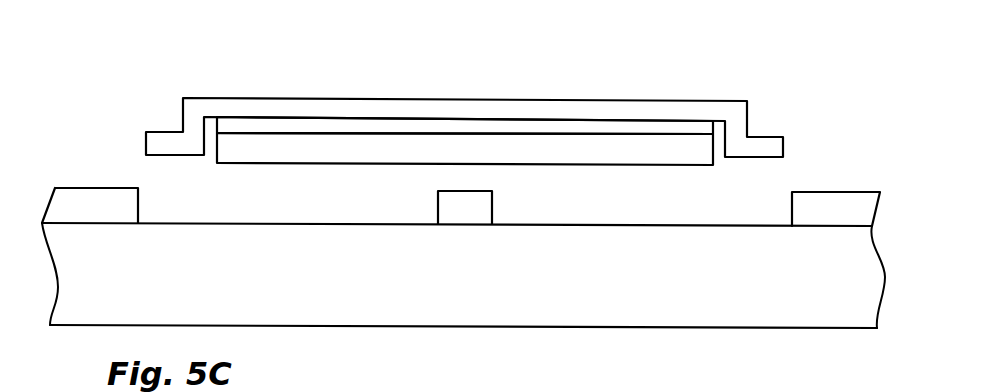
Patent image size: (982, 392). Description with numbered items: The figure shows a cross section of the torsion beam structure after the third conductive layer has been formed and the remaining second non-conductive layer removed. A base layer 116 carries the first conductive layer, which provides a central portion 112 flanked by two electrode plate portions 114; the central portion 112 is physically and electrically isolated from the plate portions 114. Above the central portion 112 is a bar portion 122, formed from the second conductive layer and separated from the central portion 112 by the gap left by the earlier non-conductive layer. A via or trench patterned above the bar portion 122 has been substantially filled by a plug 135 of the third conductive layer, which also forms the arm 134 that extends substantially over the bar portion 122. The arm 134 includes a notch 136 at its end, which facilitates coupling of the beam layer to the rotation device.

The central portion 112 is at (477, 210).
The electrode plate portions 114 is at (85, 210).
The base layer 116 is at (758, 284).
The bar portion 122 is at (369, 147).
The arm 134 is at (341, 108).
The plug 135 is at (535, 127).
The notch 136 is at (493, 102).